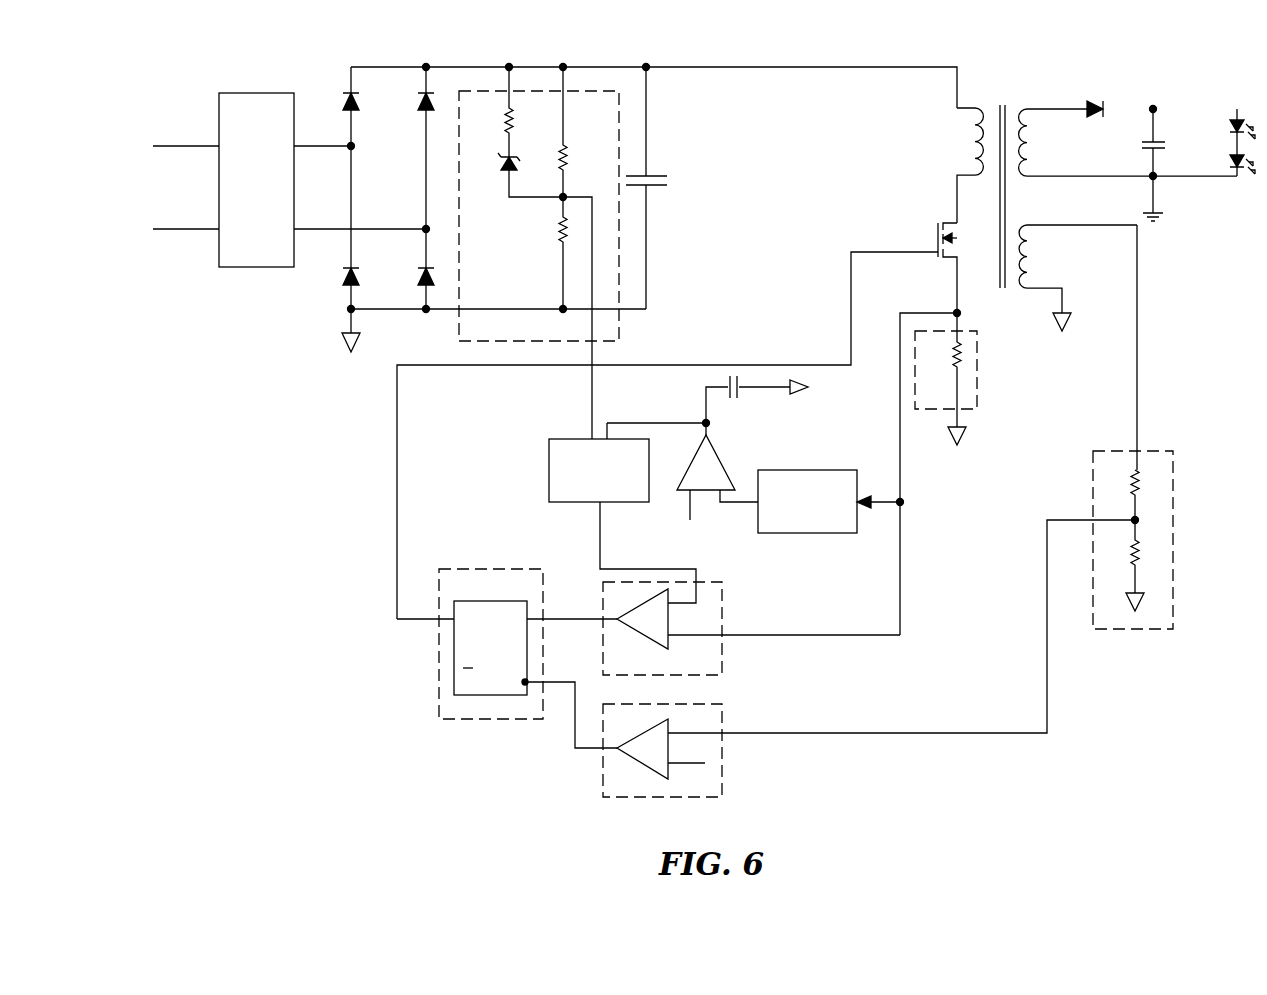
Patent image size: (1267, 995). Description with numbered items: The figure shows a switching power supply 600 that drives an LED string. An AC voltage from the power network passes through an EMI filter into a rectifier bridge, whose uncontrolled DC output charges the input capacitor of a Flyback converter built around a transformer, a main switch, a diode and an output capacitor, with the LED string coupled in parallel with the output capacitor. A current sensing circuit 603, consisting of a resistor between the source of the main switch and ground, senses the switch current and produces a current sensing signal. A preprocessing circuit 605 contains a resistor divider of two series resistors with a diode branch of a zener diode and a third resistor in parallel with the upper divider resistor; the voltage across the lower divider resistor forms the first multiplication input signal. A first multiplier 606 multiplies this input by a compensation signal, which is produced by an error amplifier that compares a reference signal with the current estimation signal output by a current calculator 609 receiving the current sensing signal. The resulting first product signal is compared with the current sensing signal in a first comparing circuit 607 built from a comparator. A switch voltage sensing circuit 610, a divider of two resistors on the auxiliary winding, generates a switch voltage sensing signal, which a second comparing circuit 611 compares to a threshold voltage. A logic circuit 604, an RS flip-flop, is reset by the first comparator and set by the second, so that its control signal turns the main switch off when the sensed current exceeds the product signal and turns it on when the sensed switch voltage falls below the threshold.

The switching power supply 600 is at (703, 431).
The current sensing circuit 603 is at (977, 388).
The logic circuit 604 is at (492, 719).
The preprocessing circuit 605 is at (618, 318).
The first multiplier 606 is at (612, 502).
The first comparing circuit 607 is at (722, 650).
The current calculator 609 is at (825, 533).
The switch voltage sensing circuit 610 is at (1137, 629).
The second comparing circuit 611 is at (655, 797).